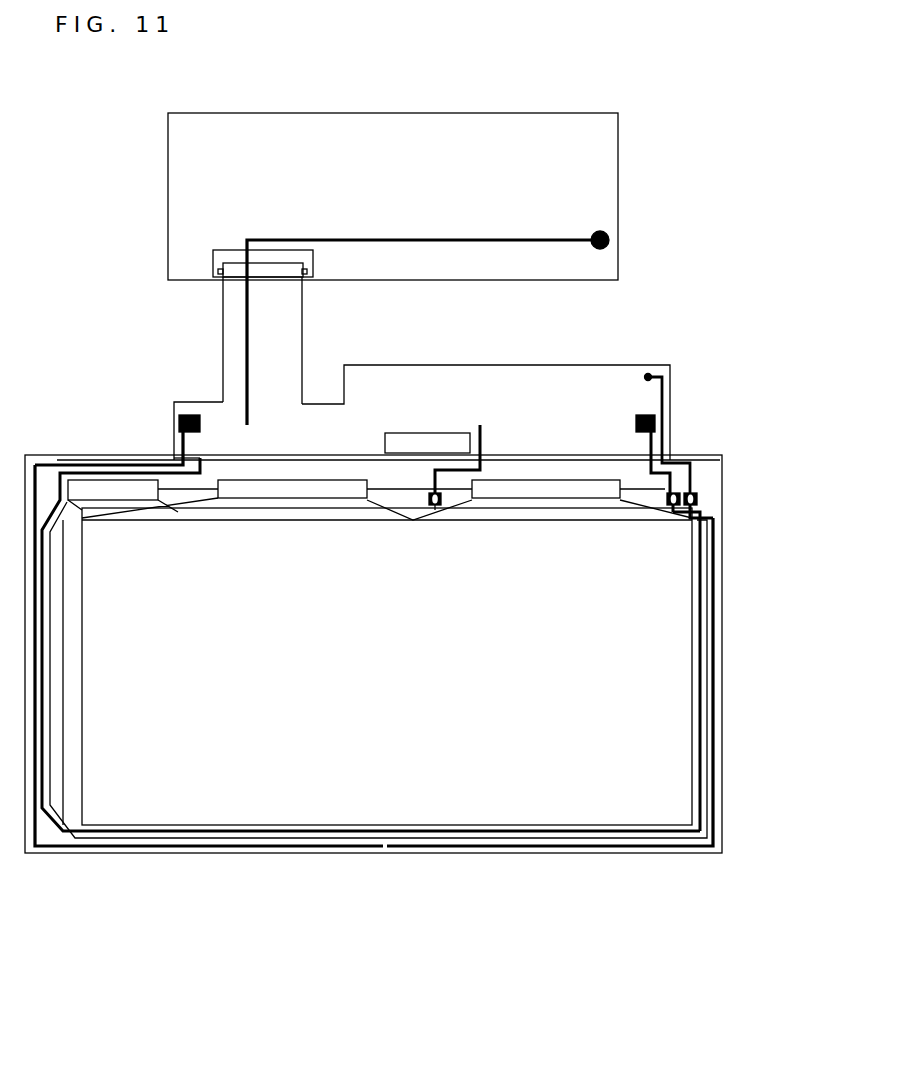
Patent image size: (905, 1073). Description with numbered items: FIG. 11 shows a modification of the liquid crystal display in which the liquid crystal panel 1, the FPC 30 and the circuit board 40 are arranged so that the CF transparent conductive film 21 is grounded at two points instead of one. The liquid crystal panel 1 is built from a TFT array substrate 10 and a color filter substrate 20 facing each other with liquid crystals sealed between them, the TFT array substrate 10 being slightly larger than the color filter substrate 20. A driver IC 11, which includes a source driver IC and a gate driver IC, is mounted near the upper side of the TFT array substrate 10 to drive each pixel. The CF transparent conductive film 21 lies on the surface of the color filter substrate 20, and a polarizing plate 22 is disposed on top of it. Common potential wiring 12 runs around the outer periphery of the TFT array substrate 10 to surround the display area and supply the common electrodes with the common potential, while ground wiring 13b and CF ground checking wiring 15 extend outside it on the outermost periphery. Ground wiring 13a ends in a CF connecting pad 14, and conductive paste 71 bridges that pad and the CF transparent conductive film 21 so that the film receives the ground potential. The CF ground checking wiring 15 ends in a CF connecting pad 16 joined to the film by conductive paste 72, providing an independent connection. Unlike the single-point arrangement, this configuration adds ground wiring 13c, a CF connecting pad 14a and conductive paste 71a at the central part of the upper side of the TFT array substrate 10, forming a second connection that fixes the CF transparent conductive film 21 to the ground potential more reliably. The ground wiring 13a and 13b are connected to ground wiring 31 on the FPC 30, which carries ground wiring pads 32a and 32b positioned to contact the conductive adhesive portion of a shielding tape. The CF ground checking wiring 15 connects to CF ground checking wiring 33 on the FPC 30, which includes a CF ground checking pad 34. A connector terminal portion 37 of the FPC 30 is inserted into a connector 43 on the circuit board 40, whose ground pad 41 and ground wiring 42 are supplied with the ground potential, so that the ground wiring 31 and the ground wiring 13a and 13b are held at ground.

The liquid crystal panel 1 is at (648, 858).
The thin-film transistor array substrate 10 is at (722, 828).
The driver IC 11 is at (270, 478).
The common potential wiring 12 is at (708, 748).
The ground wiring 13a is at (673, 490).
The ground wiring 13b is at (45, 463).
The ground wiring 13c is at (437, 472).
The CF connecting pad 14 is at (684, 491).
The CF connecting pad 14a is at (443, 505).
The CF ground checking wiring 15 is at (715, 700).
The CF connecting pad 16 is at (698, 497).
The color filter substrate 20 is at (703, 790).
The CF transparent conductive film 21 is at (697, 603).
The polarizing plate 22 is at (670, 647).
The FPC 30 is at (473, 365).
The ground wiring 31 is at (253, 312).
The ground wiring pad 32a is at (664, 400).
The ground wiring pad 32b is at (188, 415).
The CF ground checking wiring 33 is at (665, 420).
The CF ground checking pad 34 is at (650, 372).
The connector terminal portion 37 is at (233, 268).
The circuit board 40 is at (548, 125).
The ground pad 41 is at (608, 235).
The ground wiring 42 is at (397, 238).
The connector 43 is at (213, 258).
The conductive paste 71 is at (692, 520).
The conductive paste 71a is at (437, 508).
The conductive paste 72 is at (702, 508).